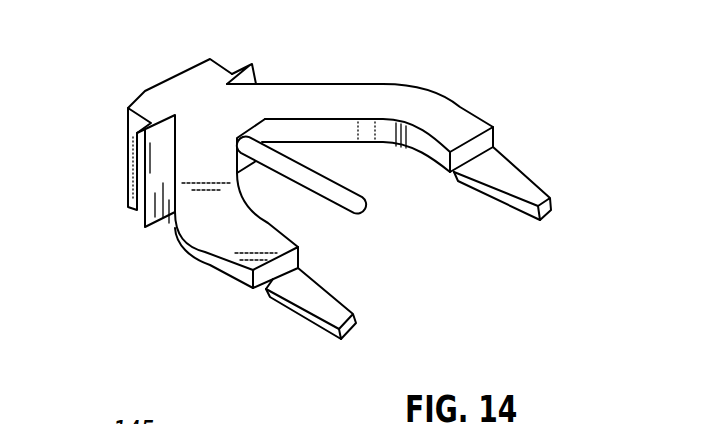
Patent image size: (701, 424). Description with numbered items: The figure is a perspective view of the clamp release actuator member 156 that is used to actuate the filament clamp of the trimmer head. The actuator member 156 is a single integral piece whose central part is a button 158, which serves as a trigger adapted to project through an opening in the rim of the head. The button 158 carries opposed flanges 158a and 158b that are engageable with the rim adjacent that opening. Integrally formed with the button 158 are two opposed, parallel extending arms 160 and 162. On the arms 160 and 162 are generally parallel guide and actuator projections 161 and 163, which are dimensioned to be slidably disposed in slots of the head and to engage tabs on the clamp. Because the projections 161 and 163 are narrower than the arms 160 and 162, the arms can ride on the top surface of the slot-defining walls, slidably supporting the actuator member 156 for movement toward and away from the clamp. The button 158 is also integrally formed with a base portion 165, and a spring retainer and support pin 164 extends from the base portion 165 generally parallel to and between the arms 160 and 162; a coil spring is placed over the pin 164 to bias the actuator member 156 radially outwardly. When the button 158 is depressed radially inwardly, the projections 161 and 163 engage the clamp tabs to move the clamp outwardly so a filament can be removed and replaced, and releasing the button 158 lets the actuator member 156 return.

The actuator member 156 is at (418, 78).
The button 158 is at (166, 83).
The flange 158a is at (135, 165).
The flange 158b is at (255, 80).
The arm 160 is at (210, 255).
The guide and actuator projection 161 is at (293, 316).
The arm 162 is at (455, 102).
The guide and actuator projection 163 is at (517, 212).
The spring retainer and support pin 164 is at (357, 216).
The base portion 165 is at (235, 123).